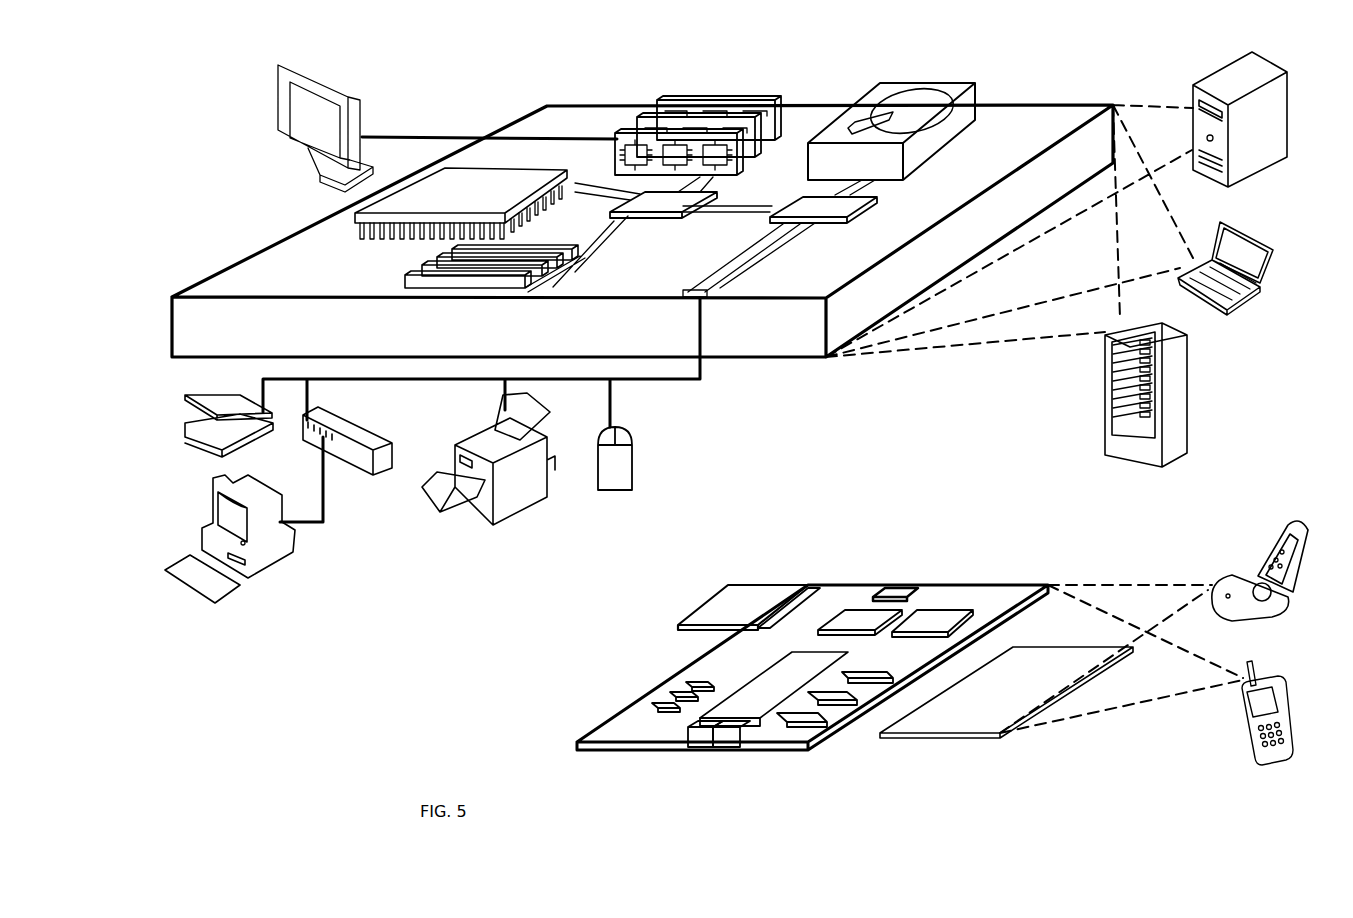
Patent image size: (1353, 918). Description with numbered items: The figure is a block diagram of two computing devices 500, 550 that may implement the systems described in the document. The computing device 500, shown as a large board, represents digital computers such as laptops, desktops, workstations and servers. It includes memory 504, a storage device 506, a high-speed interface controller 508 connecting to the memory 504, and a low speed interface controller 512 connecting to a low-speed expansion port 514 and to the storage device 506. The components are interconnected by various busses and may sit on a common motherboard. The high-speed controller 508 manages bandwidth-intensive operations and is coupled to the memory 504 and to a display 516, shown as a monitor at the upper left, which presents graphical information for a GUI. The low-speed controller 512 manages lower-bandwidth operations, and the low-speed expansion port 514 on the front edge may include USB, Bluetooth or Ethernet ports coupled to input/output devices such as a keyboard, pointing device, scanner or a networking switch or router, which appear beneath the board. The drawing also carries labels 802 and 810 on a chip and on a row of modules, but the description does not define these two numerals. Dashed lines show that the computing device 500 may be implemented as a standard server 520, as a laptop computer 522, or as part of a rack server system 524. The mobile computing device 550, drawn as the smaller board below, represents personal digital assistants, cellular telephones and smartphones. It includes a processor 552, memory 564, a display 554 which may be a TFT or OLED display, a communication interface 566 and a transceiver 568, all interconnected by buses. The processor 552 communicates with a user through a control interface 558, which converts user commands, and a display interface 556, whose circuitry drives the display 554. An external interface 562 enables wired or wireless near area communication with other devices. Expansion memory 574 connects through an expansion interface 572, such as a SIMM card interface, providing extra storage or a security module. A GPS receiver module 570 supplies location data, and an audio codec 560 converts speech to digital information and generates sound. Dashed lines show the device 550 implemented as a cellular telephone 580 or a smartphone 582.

The computing device 500 is at (478, 84).
The memory 504 is at (662, 102).
The storage device 506 is at (890, 92).
The high-speed interface controller 508 is at (643, 203).
The low speed interface controller 512 is at (823, 207).
The low-speed expansion port 514 is at (703, 298).
The display 516 is at (278, 64).
The standard server 520 is at (1190, 92).
The laptop computer 522 is at (1215, 226).
The rack server system 524 is at (1103, 418).
The computing device 550 is at (792, 562).
The processor 552 is at (742, 748).
The display 554 is at (1000, 735).
The display interface 556 is at (818, 724).
The control interface 558 is at (853, 704).
The audio codec 560 is at (863, 678).
The external interface 562 is at (710, 748).
The memory 564 is at (667, 693).
The communication interface 566 is at (860, 620).
The transceiver 568 is at (932, 617).
The GPS receiver module 570 is at (897, 588).
The expansion interface 572 is at (782, 594).
The expansion memory 574 is at (723, 595).
The cellular telephone 580 is at (1267, 527).
The smartphone 582 is at (1249, 660).
The processor 802 is at (355, 218).
The memory 810 is at (423, 268).